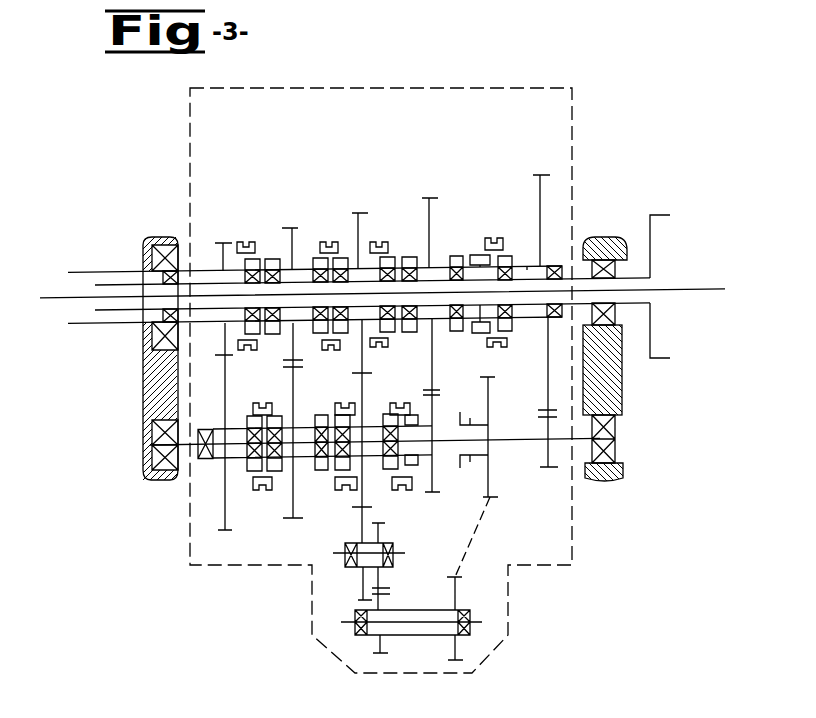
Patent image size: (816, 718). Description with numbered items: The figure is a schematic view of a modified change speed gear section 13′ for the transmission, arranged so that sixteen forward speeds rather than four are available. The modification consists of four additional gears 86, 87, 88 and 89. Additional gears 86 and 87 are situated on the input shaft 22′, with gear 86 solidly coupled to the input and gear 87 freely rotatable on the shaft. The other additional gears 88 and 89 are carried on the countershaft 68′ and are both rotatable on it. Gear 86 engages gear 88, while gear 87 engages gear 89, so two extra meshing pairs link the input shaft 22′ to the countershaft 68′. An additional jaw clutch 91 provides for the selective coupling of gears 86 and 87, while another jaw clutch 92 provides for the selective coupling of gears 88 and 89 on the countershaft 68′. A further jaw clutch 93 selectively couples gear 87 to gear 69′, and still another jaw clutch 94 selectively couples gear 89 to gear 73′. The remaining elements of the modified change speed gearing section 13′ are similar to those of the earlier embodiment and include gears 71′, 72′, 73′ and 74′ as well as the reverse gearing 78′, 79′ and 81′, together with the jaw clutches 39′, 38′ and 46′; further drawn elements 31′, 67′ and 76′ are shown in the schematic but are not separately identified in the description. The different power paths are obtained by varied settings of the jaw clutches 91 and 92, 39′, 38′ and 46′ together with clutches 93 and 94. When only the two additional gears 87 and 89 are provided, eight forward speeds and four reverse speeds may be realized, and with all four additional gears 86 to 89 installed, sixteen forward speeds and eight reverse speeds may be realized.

The modified change speed gear section 13′ is at (574, 537).
The input shaft 22′ is at (205, 338).
The clutch sleeve 31′ is at (387, 347).
The jaw clutch 38′ is at (490, 240).
The jaw clutch 39′ is at (378, 241).
The jaw clutch 46′ is at (408, 402).
The bearing 67′ is at (527, 266).
The countershaft 68′ is at (502, 440).
The gear 69′ is at (357, 228).
The gear 71′ is at (428, 213).
The gear 72′ is at (540, 190).
The gear 73′ is at (360, 493).
The gear 74′ is at (434, 486).
The gear 76′ is at (545, 418).
The reverse gearing 78′ is at (360, 567).
The reverse gearing 79′ is at (437, 633).
The reverse gearing 81′ is at (486, 380).
The additional gear 86 is at (222, 253).
The additional gear 87 is at (287, 249).
The additional gear 88 is at (222, 512).
The additional gear 89 is at (293, 493).
The jaw clutch 91 is at (247, 243).
The jaw clutch 92 is at (270, 402).
The jaw clutch 93 is at (328, 243).
The jaw clutch 94 is at (340, 402).